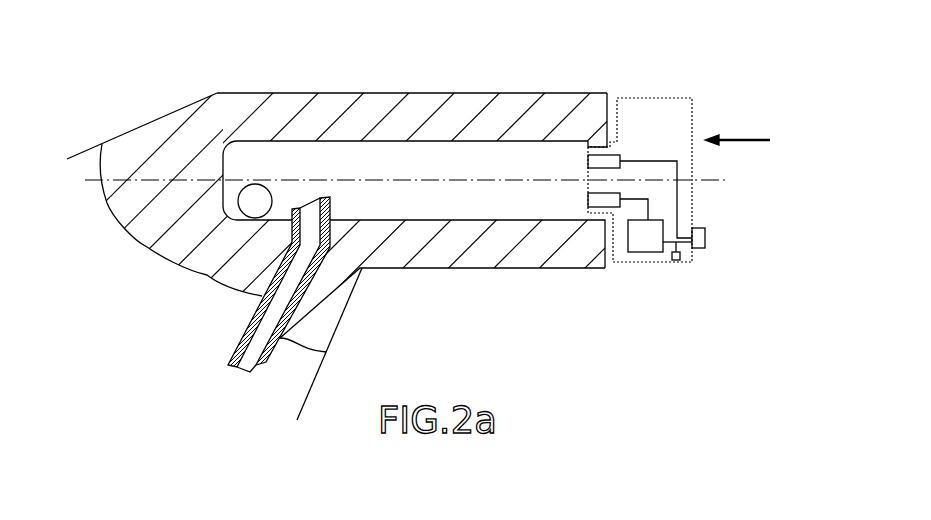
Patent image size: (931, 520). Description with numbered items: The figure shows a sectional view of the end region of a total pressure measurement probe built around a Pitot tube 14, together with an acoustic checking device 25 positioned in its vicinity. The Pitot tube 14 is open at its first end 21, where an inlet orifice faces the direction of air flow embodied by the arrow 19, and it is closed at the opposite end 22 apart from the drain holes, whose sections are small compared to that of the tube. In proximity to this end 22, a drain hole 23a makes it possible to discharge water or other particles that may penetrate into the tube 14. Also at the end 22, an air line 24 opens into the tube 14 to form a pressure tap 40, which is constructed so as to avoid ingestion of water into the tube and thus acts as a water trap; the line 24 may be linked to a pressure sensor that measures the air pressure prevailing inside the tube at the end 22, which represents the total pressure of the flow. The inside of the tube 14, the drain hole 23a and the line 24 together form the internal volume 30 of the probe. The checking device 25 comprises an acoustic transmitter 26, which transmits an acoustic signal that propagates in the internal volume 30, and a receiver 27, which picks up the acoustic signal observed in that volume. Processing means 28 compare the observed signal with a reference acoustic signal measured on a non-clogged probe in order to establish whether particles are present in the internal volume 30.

The Pitot tube 14 is at (390, 94).
The arrow 19 is at (743, 138).
The first end 21 is at (581, 78).
The end 22 is at (247, 86).
The drain hole 23a is at (262, 185).
The air line 24 is at (267, 330).
The checking device 25 is at (655, 97).
The transmitter 26 is at (620, 153).
The receiver 27 is at (611, 191).
The processing means 28 is at (634, 247).
The internal volume 30 is at (532, 174).
The pressure tap 40 is at (308, 200).